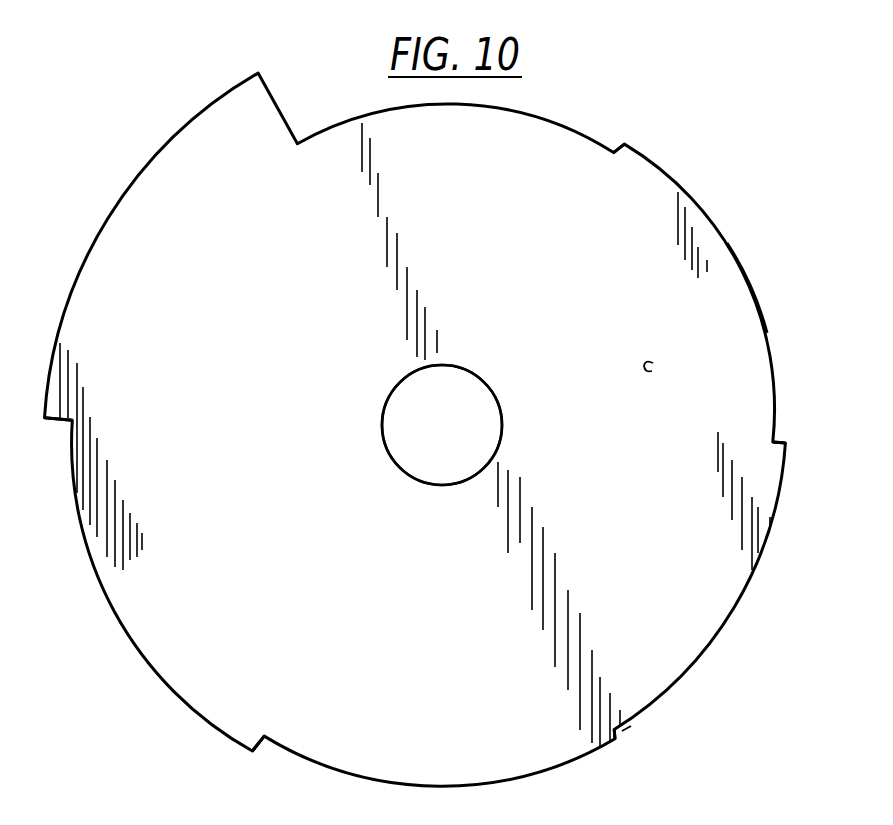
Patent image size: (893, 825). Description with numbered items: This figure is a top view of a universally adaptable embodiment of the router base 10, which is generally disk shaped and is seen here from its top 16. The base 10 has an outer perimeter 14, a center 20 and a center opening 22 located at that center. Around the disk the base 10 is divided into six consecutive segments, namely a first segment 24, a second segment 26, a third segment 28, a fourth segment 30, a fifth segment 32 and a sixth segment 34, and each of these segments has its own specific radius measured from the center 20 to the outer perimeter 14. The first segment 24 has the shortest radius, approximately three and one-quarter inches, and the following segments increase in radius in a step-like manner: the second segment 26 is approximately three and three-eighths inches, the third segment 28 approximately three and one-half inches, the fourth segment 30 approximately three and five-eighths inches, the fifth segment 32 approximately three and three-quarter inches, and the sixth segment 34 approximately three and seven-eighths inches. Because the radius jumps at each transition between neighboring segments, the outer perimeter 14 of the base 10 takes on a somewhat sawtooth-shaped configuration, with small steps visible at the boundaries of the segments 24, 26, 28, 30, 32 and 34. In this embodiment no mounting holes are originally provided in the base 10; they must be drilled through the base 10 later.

The router base 10 is at (147, 143).
The outer perimeter 14 is at (697, 192).
The top 16 is at (653, 363).
The center 20 is at (440, 443).
The center opening 22 is at (493, 385).
The first segment 24 is at (580, 115).
The second segment 26 is at (748, 273).
The third segment 28 is at (751, 540).
The fourth segment 30 is at (599, 764).
The fifth segment 32 is at (165, 557).
The sixth segment 34 is at (68, 309).